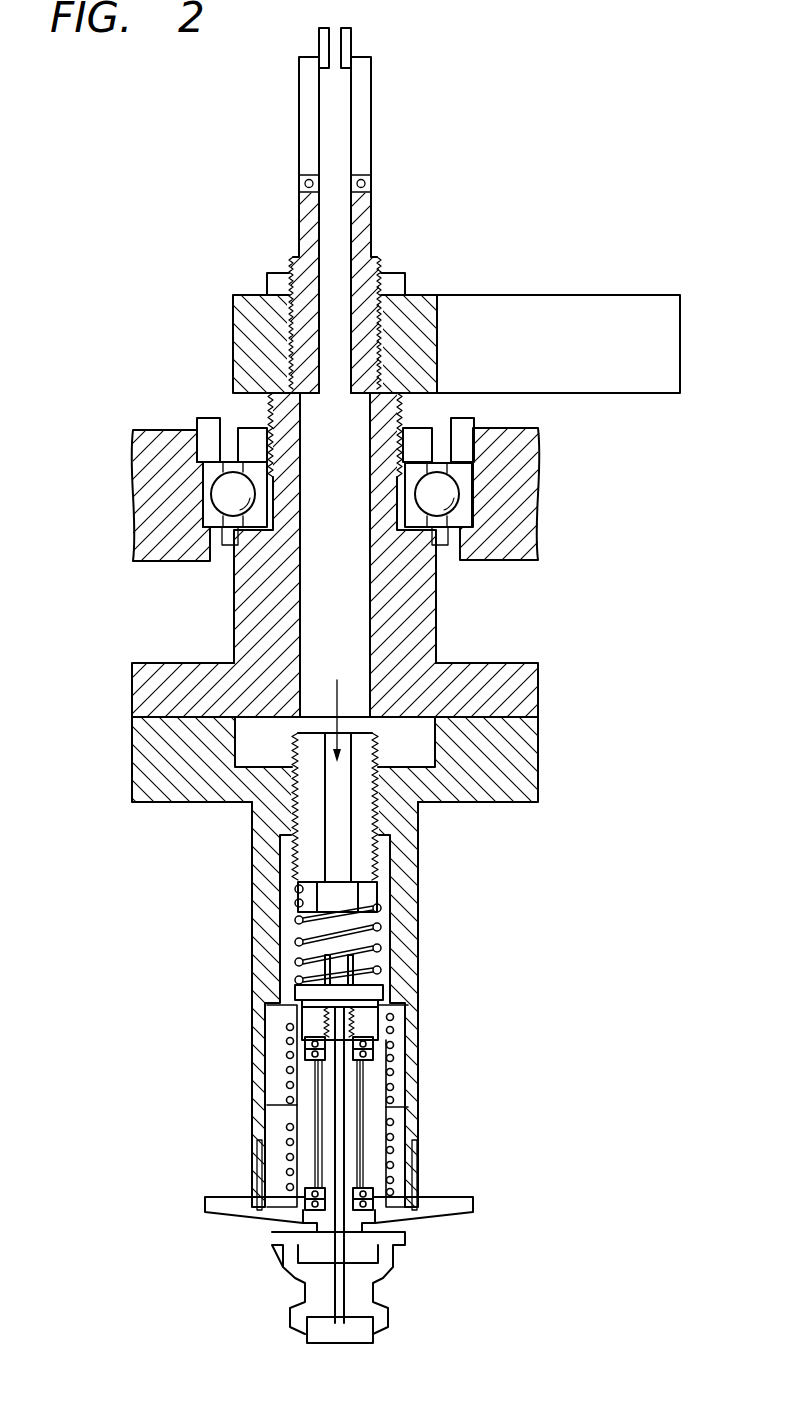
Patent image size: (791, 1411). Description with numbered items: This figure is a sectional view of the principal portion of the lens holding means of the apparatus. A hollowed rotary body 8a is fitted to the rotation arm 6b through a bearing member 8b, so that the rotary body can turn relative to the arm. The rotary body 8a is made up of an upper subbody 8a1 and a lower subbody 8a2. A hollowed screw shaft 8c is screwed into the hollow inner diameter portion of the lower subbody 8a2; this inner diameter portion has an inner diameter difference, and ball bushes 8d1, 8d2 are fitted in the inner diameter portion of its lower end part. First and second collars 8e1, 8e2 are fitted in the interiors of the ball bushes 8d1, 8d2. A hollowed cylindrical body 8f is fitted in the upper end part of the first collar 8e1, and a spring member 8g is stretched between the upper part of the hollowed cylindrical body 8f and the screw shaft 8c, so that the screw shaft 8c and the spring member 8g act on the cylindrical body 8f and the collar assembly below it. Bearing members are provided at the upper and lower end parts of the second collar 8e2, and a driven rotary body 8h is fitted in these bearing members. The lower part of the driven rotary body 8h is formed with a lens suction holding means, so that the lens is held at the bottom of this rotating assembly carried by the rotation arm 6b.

The rotation arm 6b is at (533, 453).
The bearing member 8b is at (443, 500).
The hollowed rotary body 8a is at (433, 585).
The upper subbody 8a1 is at (412, 642).
The lower subbody 8a2 is at (547, 758).
The hollowed screw shaft 8c is at (370, 822).
The spring member 8g is at (380, 922).
The hollowed cylindrical body 8f is at (383, 988).
The ball bush 8d1 is at (403, 1043).
The ball bush 8d2 is at (403, 1153).
The first collar 8e1 is at (298, 1150).
The second collar 8e2 is at (317, 1078).
The driven rotary body 8h is at (367, 1282).